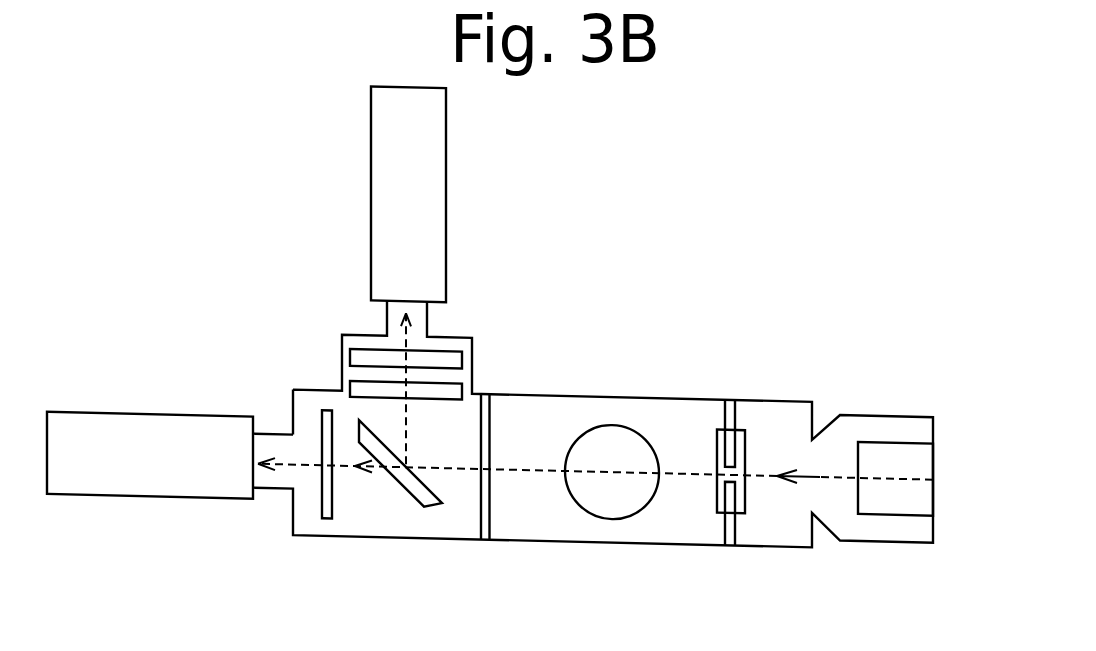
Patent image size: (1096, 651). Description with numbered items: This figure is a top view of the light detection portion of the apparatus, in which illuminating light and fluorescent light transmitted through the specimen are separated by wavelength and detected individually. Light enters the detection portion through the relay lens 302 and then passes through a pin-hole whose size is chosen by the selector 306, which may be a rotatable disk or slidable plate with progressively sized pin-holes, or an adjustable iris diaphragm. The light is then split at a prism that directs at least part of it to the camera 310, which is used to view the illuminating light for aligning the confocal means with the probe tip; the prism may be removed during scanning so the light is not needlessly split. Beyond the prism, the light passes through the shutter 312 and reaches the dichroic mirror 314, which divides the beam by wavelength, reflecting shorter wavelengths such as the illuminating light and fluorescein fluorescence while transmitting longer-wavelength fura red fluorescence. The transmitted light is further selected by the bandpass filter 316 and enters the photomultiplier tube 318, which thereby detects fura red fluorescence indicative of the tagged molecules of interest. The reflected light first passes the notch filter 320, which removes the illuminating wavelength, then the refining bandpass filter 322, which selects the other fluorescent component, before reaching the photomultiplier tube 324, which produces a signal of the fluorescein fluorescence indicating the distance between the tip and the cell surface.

The relay lens 302 is at (898, 442).
The selector 306 is at (712, 497).
The camera 310 is at (572, 500).
The shutter 312 is at (477, 515).
The dichroic mirror 314 is at (393, 480).
The bandpass filter 316 is at (317, 508).
The photomultiplier tube 318 is at (210, 414).
The notch filter 320 is at (350, 390).
The refining bandpass filter 322 is at (350, 355).
The photomultiplier tube 324 is at (371, 216).